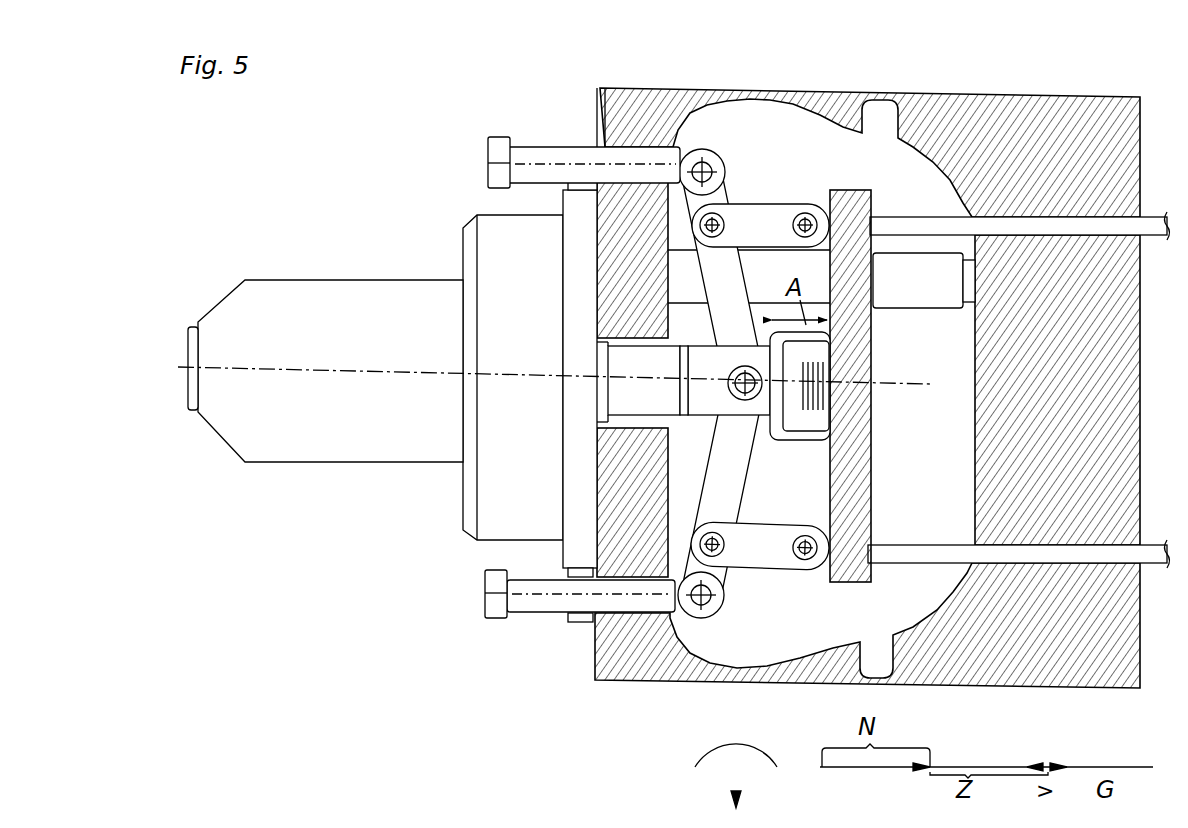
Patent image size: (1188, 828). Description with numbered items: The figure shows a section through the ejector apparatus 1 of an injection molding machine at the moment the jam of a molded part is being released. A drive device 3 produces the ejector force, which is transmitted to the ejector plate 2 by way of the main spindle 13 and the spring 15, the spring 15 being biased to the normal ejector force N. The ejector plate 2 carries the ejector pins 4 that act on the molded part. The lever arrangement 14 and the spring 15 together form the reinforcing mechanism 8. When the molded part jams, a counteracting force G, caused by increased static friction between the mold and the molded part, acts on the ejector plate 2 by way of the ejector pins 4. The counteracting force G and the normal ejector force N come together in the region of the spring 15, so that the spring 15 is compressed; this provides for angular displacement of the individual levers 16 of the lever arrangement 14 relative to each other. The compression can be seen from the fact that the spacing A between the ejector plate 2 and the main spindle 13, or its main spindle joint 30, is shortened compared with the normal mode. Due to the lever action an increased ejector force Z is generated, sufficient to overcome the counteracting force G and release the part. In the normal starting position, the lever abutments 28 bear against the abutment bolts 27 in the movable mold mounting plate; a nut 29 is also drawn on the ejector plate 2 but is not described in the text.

The ejector apparatus 1 is at (515, 105).
The ejector plate 2 is at (862, 560).
The drive device 3 is at (263, 438).
The ejector pins 4 is at (946, 222).
The reinforcing mechanism 8 is at (736, 786).
The main spindle 13 is at (632, 365).
The lever arrangement 14 is at (748, 613).
The spring 15 is at (815, 430).
The levers 16 is at (772, 230).
The abutment bolts 27 is at (533, 603).
The lever abutments 28 is at (693, 157).
The nut 29 is at (893, 283).
The main spindle joint 30 is at (735, 393).